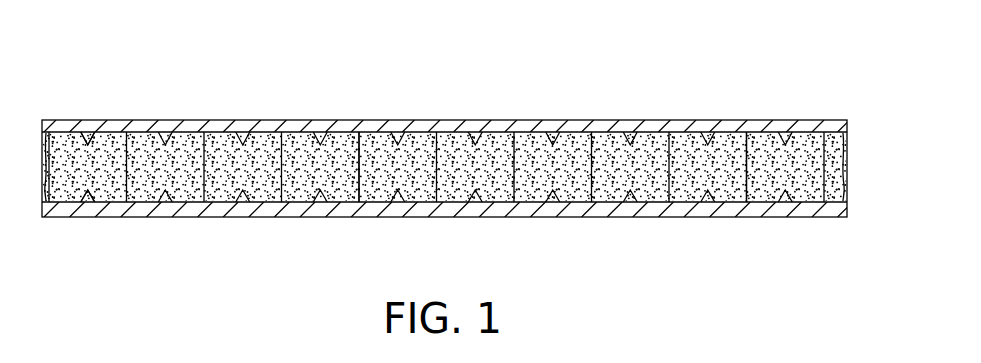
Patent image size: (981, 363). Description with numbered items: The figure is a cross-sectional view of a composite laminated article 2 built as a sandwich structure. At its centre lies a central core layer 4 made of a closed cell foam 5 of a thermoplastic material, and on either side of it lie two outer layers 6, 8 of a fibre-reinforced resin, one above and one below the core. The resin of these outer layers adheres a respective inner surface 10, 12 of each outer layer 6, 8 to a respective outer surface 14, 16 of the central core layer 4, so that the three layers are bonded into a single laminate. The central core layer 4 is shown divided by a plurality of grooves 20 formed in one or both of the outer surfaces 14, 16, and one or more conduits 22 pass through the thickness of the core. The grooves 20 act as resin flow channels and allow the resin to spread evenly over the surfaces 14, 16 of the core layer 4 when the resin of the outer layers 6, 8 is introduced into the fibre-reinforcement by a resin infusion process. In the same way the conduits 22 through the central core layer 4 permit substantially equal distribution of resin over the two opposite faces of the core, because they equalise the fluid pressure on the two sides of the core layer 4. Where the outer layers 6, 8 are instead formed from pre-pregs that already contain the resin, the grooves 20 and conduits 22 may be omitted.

The composite laminated article 2 is at (670, 89).
The central core layer 4 is at (766, 138).
The closed cell foam 5 is at (741, 203).
The outer layer 6 is at (297, 128).
The outer layer 8 is at (303, 208).
The inner surface 10 is at (182, 202).
The inner surface 12 is at (181, 138).
The outer surface 14 is at (113, 133).
The outer surface 16 is at (113, 203).
The grooves 20 is at (554, 140).
The conduits 22 is at (344, 138).